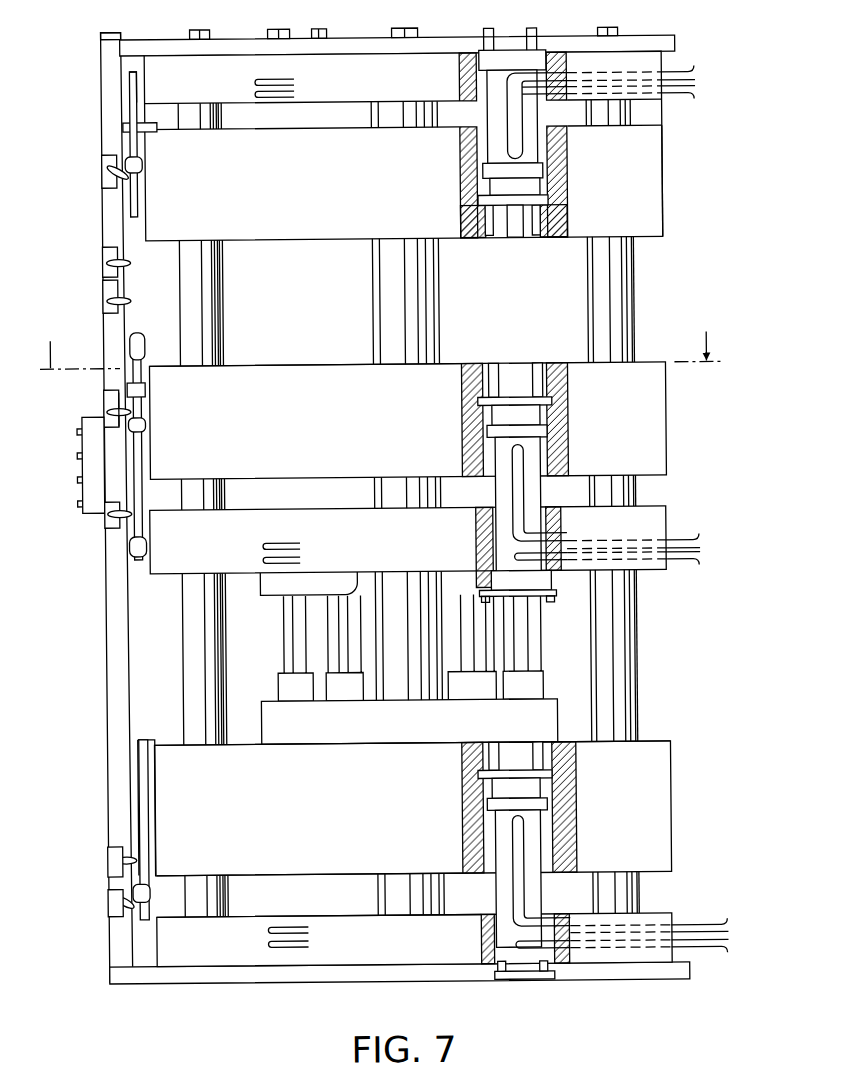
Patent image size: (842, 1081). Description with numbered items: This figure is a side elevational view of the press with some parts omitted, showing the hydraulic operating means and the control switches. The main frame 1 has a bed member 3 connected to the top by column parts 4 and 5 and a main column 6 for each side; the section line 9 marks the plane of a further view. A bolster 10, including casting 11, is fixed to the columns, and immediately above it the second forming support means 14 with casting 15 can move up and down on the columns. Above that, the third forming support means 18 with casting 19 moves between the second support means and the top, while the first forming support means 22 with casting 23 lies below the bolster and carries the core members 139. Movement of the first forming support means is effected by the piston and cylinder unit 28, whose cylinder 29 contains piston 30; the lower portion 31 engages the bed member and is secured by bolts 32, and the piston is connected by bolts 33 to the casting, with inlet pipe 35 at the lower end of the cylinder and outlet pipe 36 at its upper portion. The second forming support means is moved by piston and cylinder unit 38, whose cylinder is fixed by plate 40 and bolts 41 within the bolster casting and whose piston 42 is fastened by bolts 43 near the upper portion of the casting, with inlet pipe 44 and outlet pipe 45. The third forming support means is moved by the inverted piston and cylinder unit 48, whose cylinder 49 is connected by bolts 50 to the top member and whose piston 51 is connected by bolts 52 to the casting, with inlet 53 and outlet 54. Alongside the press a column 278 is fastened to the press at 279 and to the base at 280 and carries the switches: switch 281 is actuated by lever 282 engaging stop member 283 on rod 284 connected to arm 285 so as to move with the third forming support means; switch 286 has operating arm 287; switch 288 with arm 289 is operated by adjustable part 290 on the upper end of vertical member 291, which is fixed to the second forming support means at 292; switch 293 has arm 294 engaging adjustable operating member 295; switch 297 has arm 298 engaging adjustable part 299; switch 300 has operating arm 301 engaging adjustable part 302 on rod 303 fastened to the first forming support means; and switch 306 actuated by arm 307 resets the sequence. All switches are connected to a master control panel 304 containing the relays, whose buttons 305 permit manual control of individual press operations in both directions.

The main frame 1 is at (642, 322).
The bed member 3 is at (210, 945).
The column part 4 is at (225, 297).
The column part 5 is at (642, 284).
The main column 6 is at (375, 282).
The section line 9- 9 is at (379, 342).
The bolster 10 is at (150, 580).
The bolster casting 11 is at (170, 574).
The second forming support means 14 is at (669, 396).
The casting 15 is at (316, 368).
The third forming support means 18 is at (670, 142).
The casting 19 is at (670, 180).
The first forming support means 22 is at (674, 815).
The casting 23 is at (673, 758).
The piston and cylinder unit 28 is at (335, 900).
The cylinder 29 is at (578, 818).
The piston 30 is at (578, 780).
The lower portion 31 is at (522, 963).
The bolts 32 is at (496, 452).
The bolts 33 is at (494, 745).
The inlet pipe 35 is at (705, 950).
The outlet pipe 36 is at (692, 927).
The piston and cylinder unit 38 is at (571, 445).
The plate 40 is at (552, 604).
The bolts 41 is at (553, 592).
The piston 42 is at (484, 412).
The bolts 43 is at (494, 365).
The inlet pipe 44 is at (700, 560).
The outlet pipe 45 is at (685, 542).
The piston and cylinder unit 48 is at (323, 118).
The cylinder 49 is at (543, 116).
The bolts 50 is at (493, 32).
The piston 51 is at (560, 192).
The bolts 52 is at (494, 242).
The inlet 53 is at (702, 92).
The outlet 54 is at (697, 70).
The core members 139 is at (285, 637).
The column 278 is at (104, 66).
The fastening point 279 is at (118, 33).
The base fastening 280 is at (157, 978).
The switch 281 is at (106, 158).
The lever 282 is at (108, 172).
The stop member 283 is at (146, 163).
The rod 284 is at (137, 90).
The arm 285 is at (158, 120).
The switch 286 is at (107, 248).
The operating arm 287 is at (108, 262).
The switch 288 is at (105, 283).
The arm 289 is at (114, 300).
The adjustable part 290 is at (141, 345).
The vertical member 291 is at (119, 375).
The connection to second forming support means 292 is at (148, 388).
The switch 293 is at (110, 428).
The arm 294 is at (108, 390).
The adjustable operating member 295 is at (148, 424).
The switch 297 is at (112, 520).
The arm 298 is at (118, 543).
The adjustable part 299 is at (148, 545).
The switch 300 is at (115, 860).
The operating arm 301 is at (124, 870).
The adjustable part 302 is at (148, 890).
The rod 303 is at (147, 805).
The master control panel 304 is at (94, 492).
The buttons 305 is at (80, 482).
The switch 306 is at (110, 910).
The arm 307 is at (125, 915).